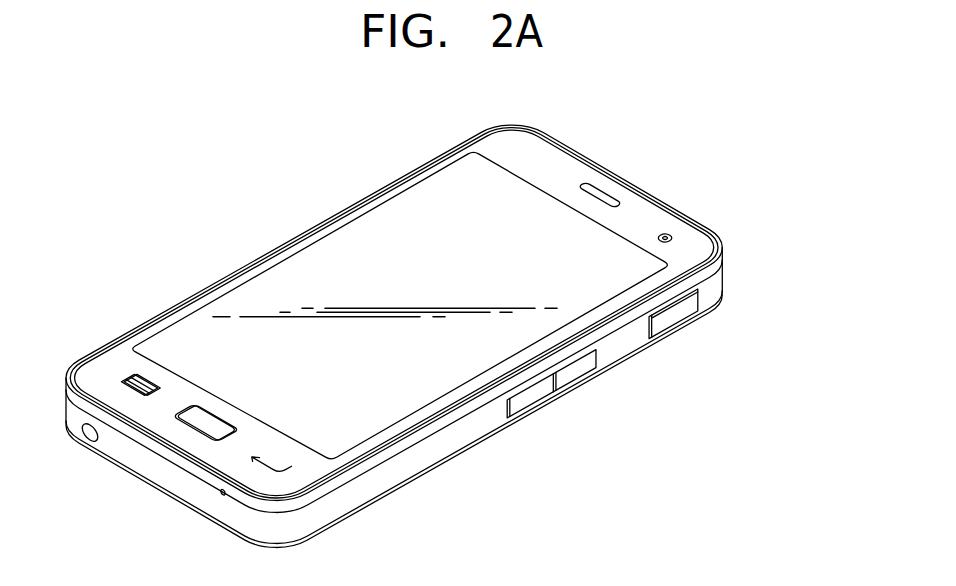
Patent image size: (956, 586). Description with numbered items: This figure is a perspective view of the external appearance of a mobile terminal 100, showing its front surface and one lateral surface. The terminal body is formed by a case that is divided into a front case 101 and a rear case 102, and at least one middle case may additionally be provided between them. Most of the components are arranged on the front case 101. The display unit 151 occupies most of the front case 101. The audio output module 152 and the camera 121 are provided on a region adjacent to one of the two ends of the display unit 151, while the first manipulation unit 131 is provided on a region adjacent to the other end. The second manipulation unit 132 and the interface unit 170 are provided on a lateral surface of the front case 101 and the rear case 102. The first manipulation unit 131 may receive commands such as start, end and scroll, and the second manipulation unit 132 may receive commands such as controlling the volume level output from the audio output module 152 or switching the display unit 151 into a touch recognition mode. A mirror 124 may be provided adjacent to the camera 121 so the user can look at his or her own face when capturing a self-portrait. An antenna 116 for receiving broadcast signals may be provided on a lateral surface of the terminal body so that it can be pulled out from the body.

The mobile terminal 100 is at (416, 337).
The front case 101 is at (722, 262).
The rear case 102 is at (717, 287).
The antenna 116 is at (85, 440).
The camera 121 is at (669, 234).
The mirror 124 is at (221, 495).
The first manipulation unit 131 is at (130, 381).
The second manipulation unit 132 is at (573, 377).
The display unit 151 is at (362, 232).
The audio output module 152 is at (604, 190).
The interface unit 170 is at (673, 318).